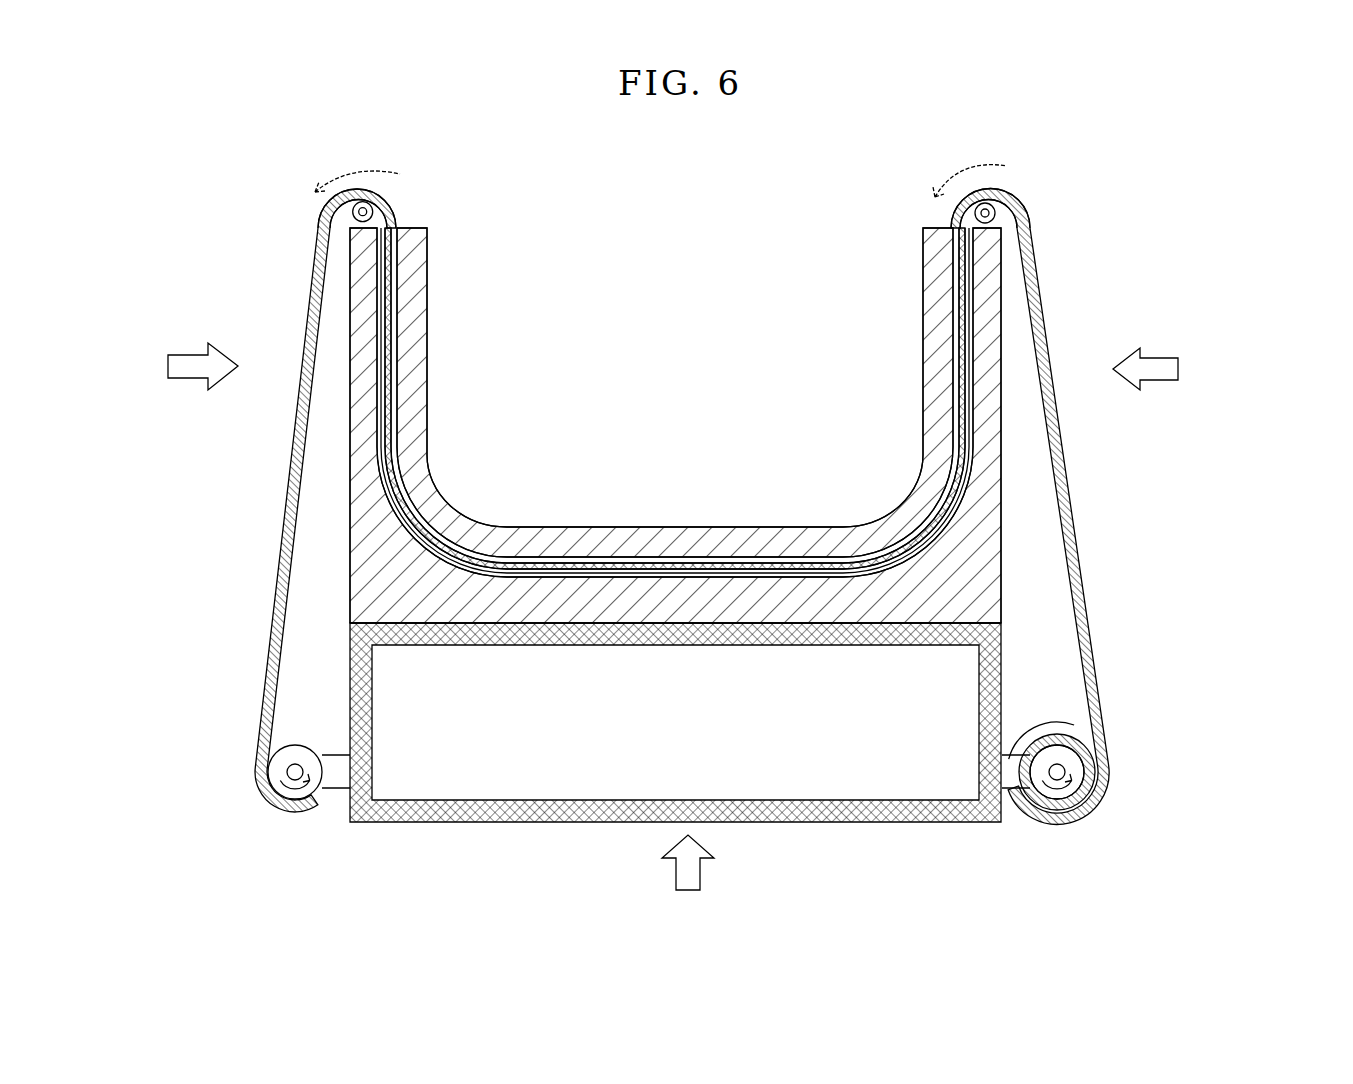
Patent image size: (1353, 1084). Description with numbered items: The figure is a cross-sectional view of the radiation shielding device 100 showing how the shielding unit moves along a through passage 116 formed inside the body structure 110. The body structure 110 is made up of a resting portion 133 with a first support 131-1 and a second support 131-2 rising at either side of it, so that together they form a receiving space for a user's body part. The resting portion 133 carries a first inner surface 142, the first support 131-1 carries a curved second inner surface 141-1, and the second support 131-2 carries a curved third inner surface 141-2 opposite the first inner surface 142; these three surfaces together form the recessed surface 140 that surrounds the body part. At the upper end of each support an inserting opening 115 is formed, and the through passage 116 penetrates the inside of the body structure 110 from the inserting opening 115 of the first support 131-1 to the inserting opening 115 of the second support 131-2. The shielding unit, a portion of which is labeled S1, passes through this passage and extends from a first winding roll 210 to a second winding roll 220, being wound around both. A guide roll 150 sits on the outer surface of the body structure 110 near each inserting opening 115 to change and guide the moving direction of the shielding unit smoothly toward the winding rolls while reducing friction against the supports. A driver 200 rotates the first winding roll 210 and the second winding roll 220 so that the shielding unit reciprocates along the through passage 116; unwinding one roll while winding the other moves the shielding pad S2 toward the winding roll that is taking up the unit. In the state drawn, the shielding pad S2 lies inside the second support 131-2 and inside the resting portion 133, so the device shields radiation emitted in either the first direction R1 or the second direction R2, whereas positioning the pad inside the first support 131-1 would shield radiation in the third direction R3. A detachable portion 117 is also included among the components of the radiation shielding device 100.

The radiation shielding device 100 is at (1138, 180).
The body structure 110 is at (1216, 718).
The inserting opening 115 is at (396, 210).
The through passage 116 is at (615, 562).
The detachable portion 117 is at (845, 587).
The first support 131-1 is at (418, 605).
The second support 131-2 is at (920, 600).
The resting portion 133 is at (625, 600).
The recessed surface 140 is at (832, 277).
The second inner surface 141-1 is at (432, 352).
The third inner surface 141-2 is at (920, 340).
The first inner surface 142 is at (668, 540).
The guide roll 150 is at (358, 212).
The driver 200 is at (1068, 816).
The first winding roll 210 is at (1057, 812).
The second winding roll 220 is at (295, 800).
The display panel sheet S1 is at (1038, 268).
The shielding pad S2 is at (885, 548).
The first direction R1 is at (1166, 369).
The second direction R2 is at (688, 886).
The third direction R3 is at (185, 366).